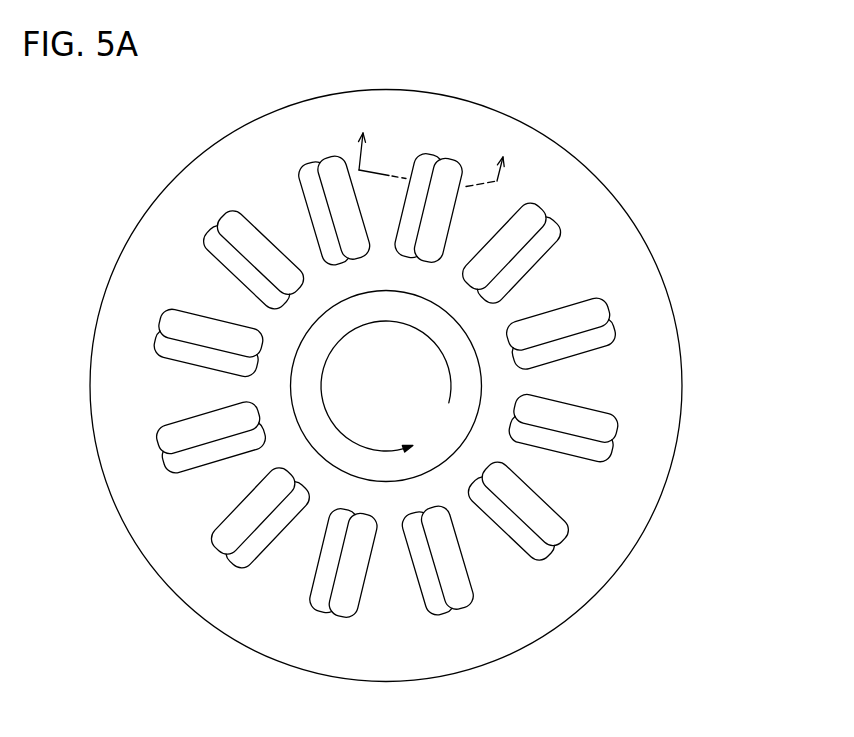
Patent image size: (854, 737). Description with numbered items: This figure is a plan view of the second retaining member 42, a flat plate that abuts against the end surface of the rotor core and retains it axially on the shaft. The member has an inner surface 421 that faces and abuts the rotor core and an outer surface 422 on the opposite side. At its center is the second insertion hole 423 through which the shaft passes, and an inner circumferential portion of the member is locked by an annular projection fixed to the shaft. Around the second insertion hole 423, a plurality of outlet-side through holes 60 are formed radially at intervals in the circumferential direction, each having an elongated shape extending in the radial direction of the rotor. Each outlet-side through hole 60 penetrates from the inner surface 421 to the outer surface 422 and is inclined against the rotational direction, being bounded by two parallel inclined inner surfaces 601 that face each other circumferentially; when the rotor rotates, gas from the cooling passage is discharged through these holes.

The second retaining member 42 is at (466, 99).
The outer surface 422 is at (562, 151).
The inner surface 421 is at (597, 220).
The second insertion hole 423 is at (460, 445).
The outlet-side through hole 60 is at (397, 335).
The inclined inner surface 601 is at (595, 332).